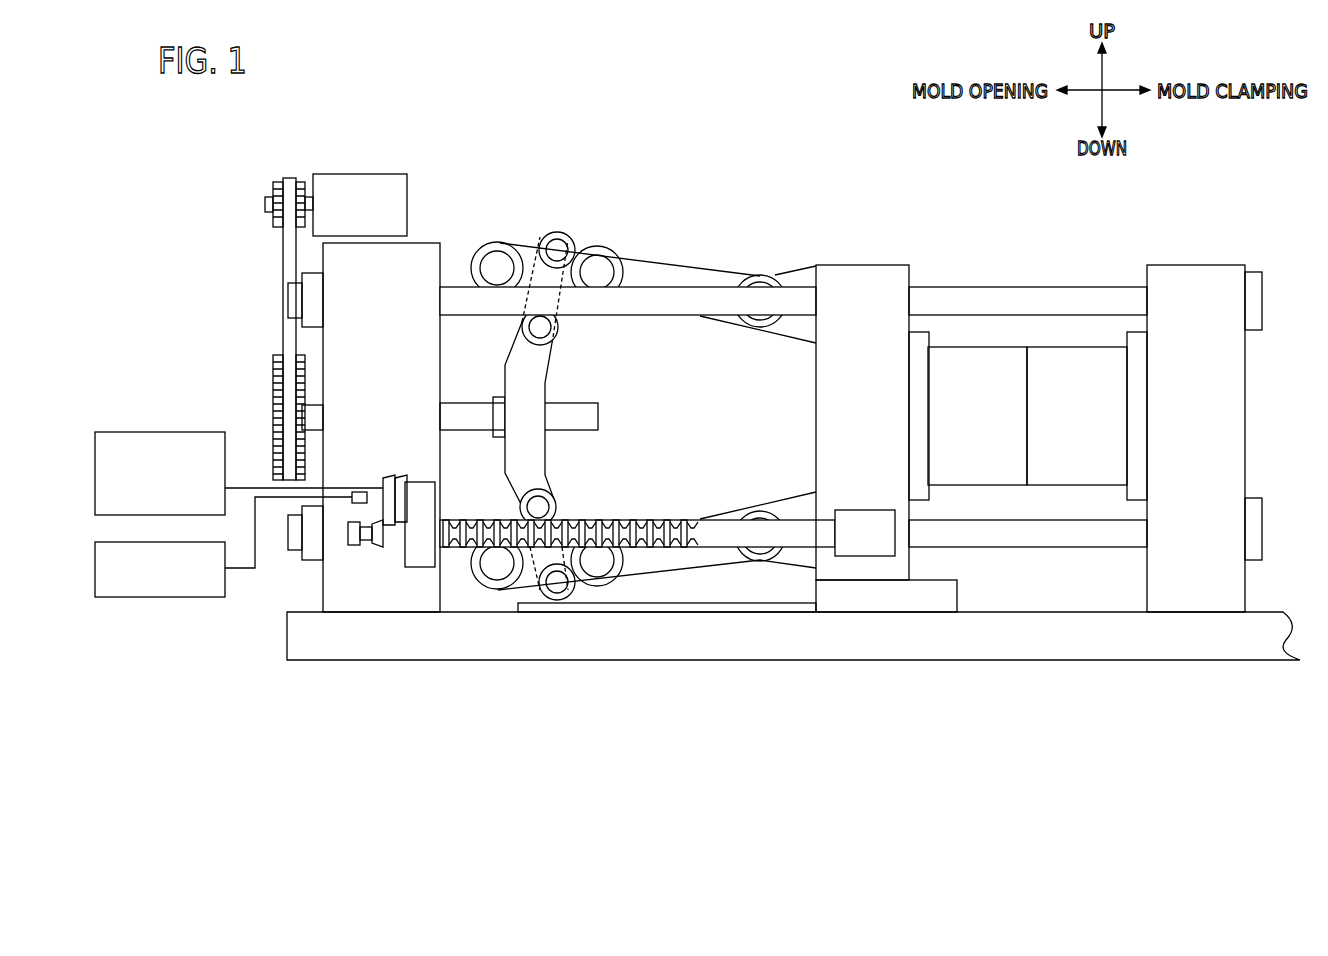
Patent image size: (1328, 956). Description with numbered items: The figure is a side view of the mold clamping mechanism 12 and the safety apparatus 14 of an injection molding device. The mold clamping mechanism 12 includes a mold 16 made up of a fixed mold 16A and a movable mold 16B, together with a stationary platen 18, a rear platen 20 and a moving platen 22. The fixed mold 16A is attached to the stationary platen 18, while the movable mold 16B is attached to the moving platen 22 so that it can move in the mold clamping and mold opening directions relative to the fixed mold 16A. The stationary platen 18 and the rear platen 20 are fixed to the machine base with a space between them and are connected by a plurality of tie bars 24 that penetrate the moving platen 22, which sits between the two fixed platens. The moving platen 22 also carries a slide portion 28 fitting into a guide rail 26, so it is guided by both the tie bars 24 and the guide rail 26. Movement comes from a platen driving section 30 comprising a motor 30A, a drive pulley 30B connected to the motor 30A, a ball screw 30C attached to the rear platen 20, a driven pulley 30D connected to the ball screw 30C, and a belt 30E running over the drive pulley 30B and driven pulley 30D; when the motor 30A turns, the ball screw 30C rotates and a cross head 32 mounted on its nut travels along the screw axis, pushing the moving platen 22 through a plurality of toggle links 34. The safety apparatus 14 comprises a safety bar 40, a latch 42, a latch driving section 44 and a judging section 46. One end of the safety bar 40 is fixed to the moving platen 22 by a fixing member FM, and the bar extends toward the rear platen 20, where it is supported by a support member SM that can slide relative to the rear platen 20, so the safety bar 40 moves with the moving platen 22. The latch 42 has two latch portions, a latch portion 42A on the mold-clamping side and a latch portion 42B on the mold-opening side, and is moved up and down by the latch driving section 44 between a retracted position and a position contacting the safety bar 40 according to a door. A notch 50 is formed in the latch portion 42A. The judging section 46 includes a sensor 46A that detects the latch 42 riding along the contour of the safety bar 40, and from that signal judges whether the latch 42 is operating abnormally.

The mold clamping mechanism 12 is at (870, 178).
The safety apparatus 14 is at (642, 552).
The mold 16 is at (1027, 345).
The fixed mold 16A is at (1057, 365).
The movable mold 16B is at (987, 365).
The stationary platen 18 is at (1188, 280).
The rear platen 20 is at (418, 262).
The moving platen 22 is at (858, 282).
The tie bars 24 is at (1132, 305).
The guide rail 26 is at (730, 605).
The slide portion 28 is at (878, 600).
The platen driving section 30 is at (253, 150).
The motor 30A is at (344, 183).
The drive pulley 30B is at (272, 196).
The ball screw 30C is at (599, 419).
The driven pulley 30D is at (273, 402).
The belt 30E is at (283, 330).
The cross head 32 is at (534, 369).
The toggle links 34 is at (455, 262).
The safety bar 40 is at (636, 520).
The latch 42 is at (385, 442).
The latch portion 42A is at (408, 461).
The latch portion 42B is at (390, 475).
The latch driving section 44 is at (150, 432).
The judging section 46 is at (162, 598).
The sensor 46A is at (358, 490).
The notch 50 is at (390, 524).
The support member SM is at (424, 498).
The fixing member FM is at (862, 525).